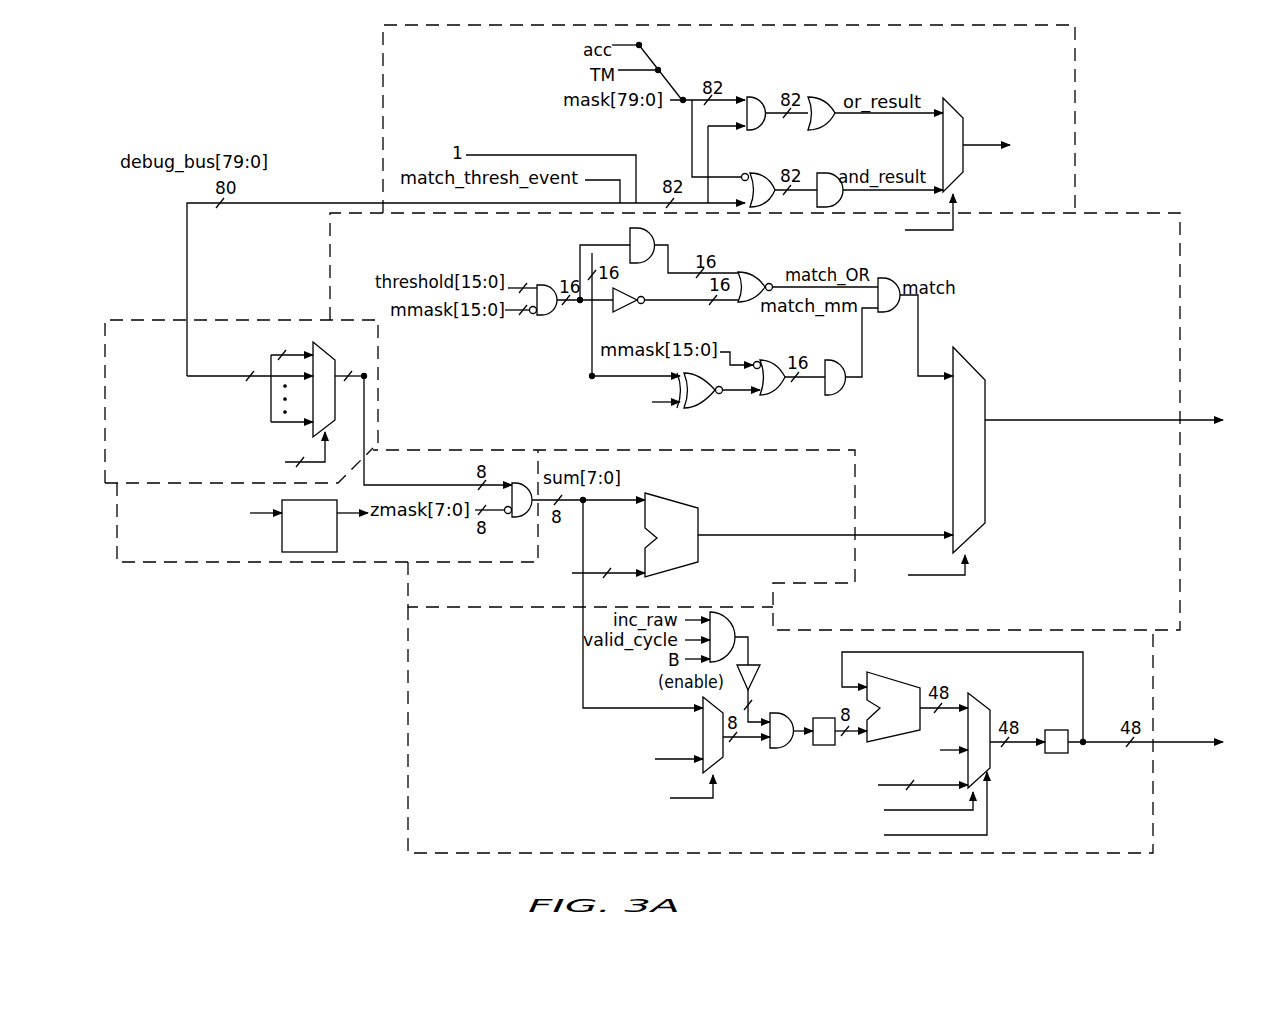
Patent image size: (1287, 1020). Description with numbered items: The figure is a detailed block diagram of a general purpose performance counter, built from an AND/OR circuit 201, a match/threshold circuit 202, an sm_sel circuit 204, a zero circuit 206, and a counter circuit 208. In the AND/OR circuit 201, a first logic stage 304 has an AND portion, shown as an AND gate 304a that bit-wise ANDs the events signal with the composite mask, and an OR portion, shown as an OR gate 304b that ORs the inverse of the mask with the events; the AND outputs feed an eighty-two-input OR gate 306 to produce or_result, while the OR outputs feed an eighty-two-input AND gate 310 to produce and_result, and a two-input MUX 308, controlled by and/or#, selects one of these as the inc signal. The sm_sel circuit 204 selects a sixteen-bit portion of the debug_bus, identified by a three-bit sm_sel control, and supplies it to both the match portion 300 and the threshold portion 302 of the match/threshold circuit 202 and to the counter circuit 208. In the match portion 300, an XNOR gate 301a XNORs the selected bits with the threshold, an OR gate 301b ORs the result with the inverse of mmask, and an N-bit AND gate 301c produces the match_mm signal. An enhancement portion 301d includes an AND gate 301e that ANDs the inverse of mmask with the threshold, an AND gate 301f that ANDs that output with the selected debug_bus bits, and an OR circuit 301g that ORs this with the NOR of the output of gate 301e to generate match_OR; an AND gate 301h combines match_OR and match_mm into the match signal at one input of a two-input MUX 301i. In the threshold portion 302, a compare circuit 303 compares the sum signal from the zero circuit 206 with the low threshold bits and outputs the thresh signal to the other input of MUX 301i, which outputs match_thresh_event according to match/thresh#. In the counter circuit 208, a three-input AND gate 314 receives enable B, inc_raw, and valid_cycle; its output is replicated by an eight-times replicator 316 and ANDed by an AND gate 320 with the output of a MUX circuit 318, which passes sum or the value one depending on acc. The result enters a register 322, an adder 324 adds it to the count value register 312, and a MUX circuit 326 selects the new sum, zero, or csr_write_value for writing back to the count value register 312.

The AND/OR circuit 201 is at (1075, 108).
The match/threshold circuit 202 is at (1188, 342).
The sm_sel circuit 204 is at (160, 318).
The zero circuit 206 is at (225, 565).
The counter circuit 208 is at (1153, 792).
The match portion 300 is at (1125, 213).
The XNOR gate 301a is at (708, 406).
The OR gate 301b is at (763, 360).
The N-bit AND gate 301c is at (842, 390).
The enhancement portion 301d is at (1012, 291).
The AND gate 301e is at (545, 283).
The AND gate 301f is at (648, 228).
The OR circuit 301g is at (742, 272).
The AND gate 301h is at (886, 312).
The two-input MUX 301i is at (988, 440).
The threshold portion 302 is at (637, 553).
The compare circuit 303 is at (690, 506).
The first logic stage 304 is at (755, 119).
The AND gate 304a is at (757, 97).
The OR gate 304b is at (760, 173).
The 82-input OR gate 306 is at (830, 97).
The two-input MUX 308 is at (963, 118).
The 82-input AND gate 310 is at (835, 173).
The count value register 312 is at (1055, 753).
The three-input AND gate 314 is at (735, 636).
The 8x replicator 316 is at (755, 665).
The MUX circuit 318 is at (703, 728).
The AND gate 320 is at (778, 713).
The register 322 is at (826, 745).
The adder 324 is at (905, 680).
The MUX circuit 326 is at (992, 700).